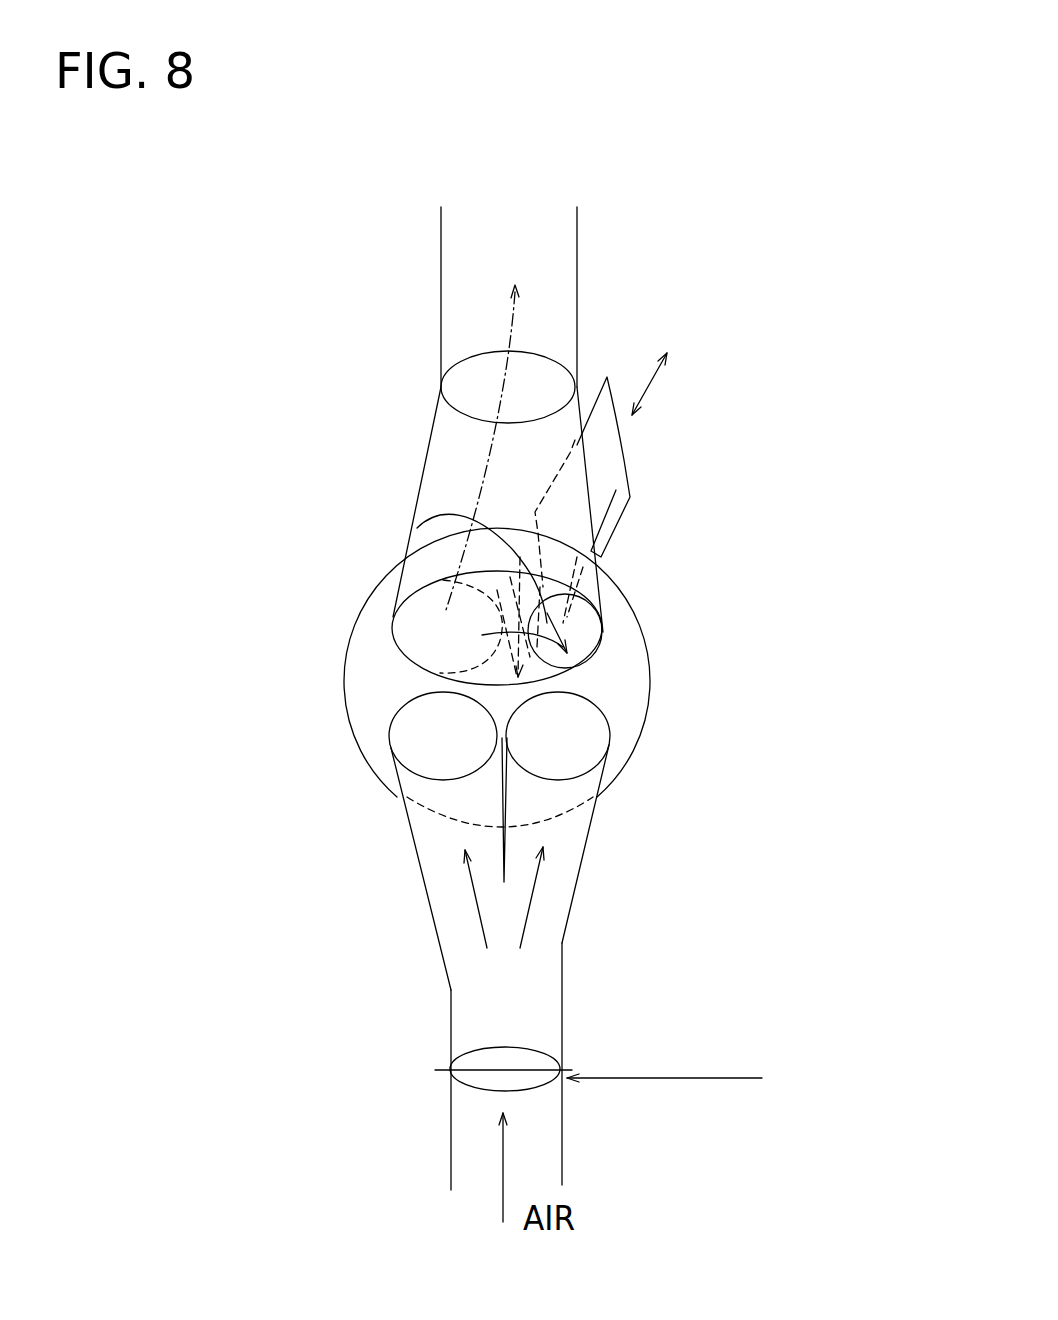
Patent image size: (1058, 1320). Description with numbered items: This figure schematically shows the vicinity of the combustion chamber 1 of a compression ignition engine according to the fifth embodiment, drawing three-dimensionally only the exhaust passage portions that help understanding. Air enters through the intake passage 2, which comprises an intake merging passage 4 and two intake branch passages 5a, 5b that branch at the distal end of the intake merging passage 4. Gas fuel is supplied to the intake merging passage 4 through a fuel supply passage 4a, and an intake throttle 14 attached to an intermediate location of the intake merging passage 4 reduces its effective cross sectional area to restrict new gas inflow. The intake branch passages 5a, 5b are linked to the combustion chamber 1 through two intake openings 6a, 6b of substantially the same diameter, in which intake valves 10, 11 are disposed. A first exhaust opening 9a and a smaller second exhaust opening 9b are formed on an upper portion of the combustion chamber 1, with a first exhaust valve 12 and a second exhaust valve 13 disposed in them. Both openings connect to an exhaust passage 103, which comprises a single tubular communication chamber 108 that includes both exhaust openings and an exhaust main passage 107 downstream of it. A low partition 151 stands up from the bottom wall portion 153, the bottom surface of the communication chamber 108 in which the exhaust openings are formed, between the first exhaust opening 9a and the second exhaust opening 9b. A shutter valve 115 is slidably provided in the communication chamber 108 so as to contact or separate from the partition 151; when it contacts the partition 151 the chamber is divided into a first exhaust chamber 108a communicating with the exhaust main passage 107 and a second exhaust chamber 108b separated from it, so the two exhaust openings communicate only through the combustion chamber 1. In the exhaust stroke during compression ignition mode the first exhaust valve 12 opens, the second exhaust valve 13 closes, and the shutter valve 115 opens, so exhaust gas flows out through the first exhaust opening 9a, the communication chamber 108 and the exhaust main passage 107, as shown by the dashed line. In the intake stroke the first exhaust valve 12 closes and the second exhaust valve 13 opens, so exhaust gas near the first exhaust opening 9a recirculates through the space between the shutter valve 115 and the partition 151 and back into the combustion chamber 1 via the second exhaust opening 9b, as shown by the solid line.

The combustion chamber 1 is at (335, 720).
The intake passage 2 is at (352, 1025).
The intake merging passage 4 is at (451, 1030).
The fuel supply passage 4a is at (718, 1078).
The intake branch passage 5a is at (420, 870).
The intake branch passage 5b is at (575, 887).
The intake opening 6a is at (392, 745).
The intake opening 6b is at (607, 743).
The first exhaust opening 9a is at (393, 638).
The second exhaust opening 9b is at (603, 633).
The intake valve 10 is at (423, 728).
The intake valve 11 is at (557, 735).
The first exhaust valve 12 is at (430, 640).
The second exhaust valve 13 is at (582, 648).
The intake throttle 14 is at (535, 1090).
The exhaust passage 103 is at (358, 380).
The exhaust main passage 107 is at (577, 278).
The communication chamber 108 is at (419, 490).
The first exhaust chamber 108a is at (445, 449).
The second exhaust chamber 108b is at (588, 592).
The shutter valve 115 is at (625, 517).
The partition 151 is at (417, 528).
The bottom wall portion 153 is at (497, 572).